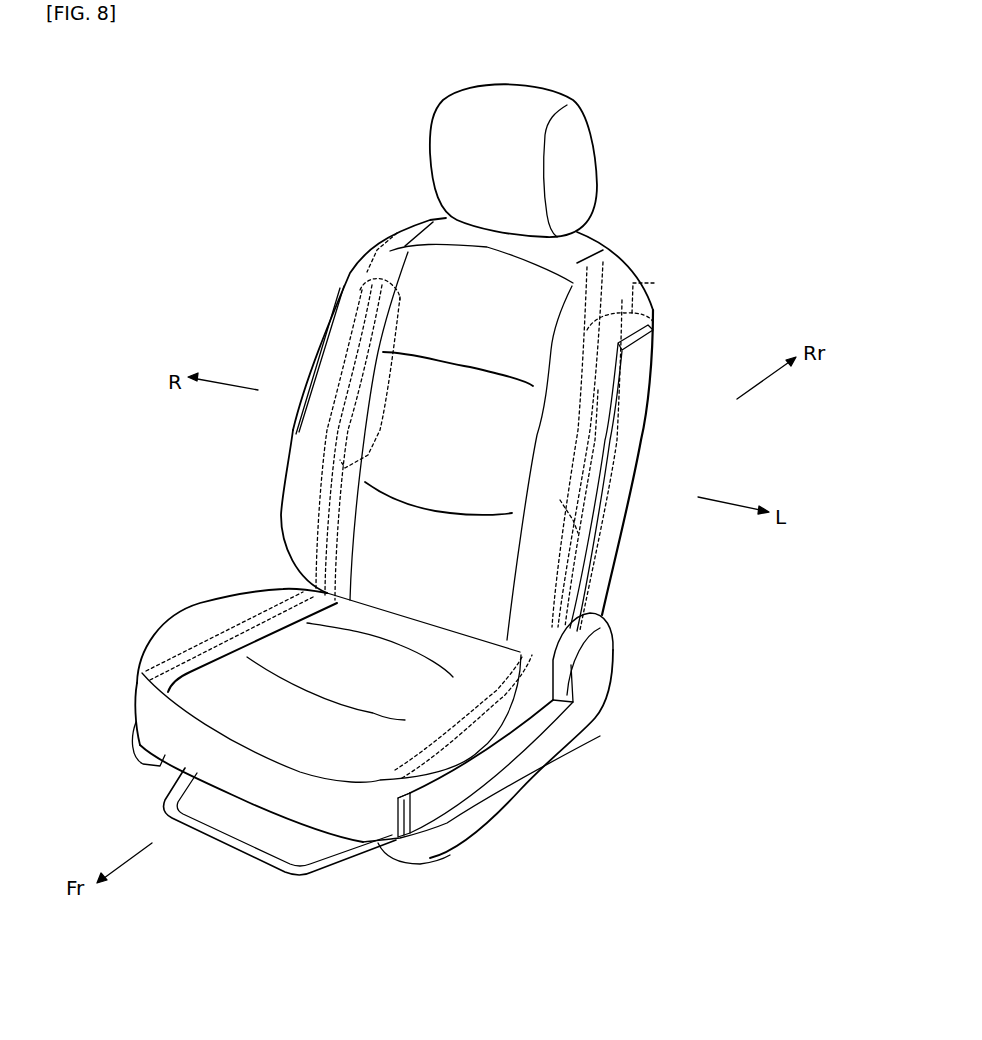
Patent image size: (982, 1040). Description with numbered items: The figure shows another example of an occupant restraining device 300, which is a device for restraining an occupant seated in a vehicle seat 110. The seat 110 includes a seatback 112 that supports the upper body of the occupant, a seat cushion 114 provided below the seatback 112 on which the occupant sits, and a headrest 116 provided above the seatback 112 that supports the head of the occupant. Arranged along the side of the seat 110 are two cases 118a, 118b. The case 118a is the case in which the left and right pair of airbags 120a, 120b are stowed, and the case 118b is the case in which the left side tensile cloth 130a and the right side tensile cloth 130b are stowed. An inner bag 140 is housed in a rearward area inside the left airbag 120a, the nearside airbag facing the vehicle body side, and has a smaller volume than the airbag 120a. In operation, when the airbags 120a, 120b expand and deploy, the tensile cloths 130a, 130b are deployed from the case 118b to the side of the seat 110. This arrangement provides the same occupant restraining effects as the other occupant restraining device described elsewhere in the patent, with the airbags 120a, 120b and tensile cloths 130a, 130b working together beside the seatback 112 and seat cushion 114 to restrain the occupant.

The occupant restraining device 300 is at (361, 150).
The seat 110 is at (652, 246).
The seatback 112 is at (654, 381).
The seat cushion 114 is at (345, 818).
The headrest 116 is at (527, 101).
The case 118a is at (320, 342).
The case 118b is at (425, 810).
The airbag 120a is at (653, 317).
The airbag 120b is at (360, 263).
The left side tensile cloth 130a is at (654, 283).
The right side tensile cloth 130b is at (397, 232).
The inner bag 140 is at (552, 340).